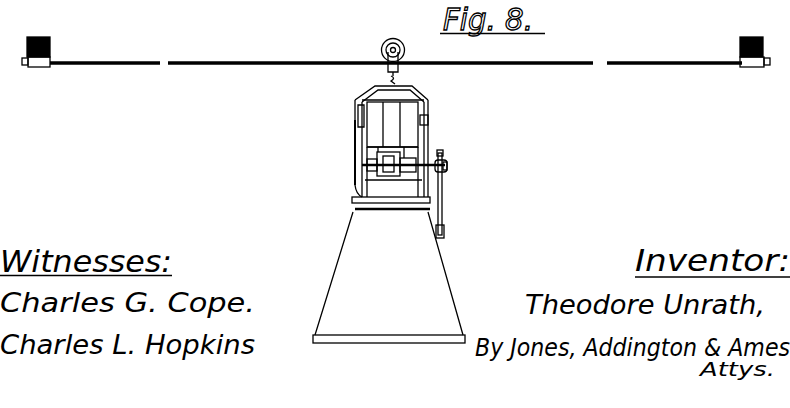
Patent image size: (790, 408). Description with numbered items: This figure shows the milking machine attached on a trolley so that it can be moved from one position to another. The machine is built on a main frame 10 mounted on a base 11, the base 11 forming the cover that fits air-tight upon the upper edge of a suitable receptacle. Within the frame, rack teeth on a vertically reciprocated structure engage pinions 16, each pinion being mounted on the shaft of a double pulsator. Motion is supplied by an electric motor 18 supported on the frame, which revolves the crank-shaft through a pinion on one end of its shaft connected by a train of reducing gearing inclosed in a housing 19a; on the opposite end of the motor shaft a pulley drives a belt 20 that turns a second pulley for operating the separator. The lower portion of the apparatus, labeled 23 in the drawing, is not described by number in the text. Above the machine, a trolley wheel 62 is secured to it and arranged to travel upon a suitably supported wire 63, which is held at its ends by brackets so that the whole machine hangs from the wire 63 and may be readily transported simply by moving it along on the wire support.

The main frame 10 is at (426, 138).
The base 11 is at (445, 178).
The pinion 16 is at (414, 93).
The electric motor 18 is at (390, 170).
The housing 19a is at (357, 157).
The belt 20 is at (430, 206).
The horn 23 is at (443, 312).
The trolley wheel 62 is at (393, 40).
The wire 63 is at (190, 62).